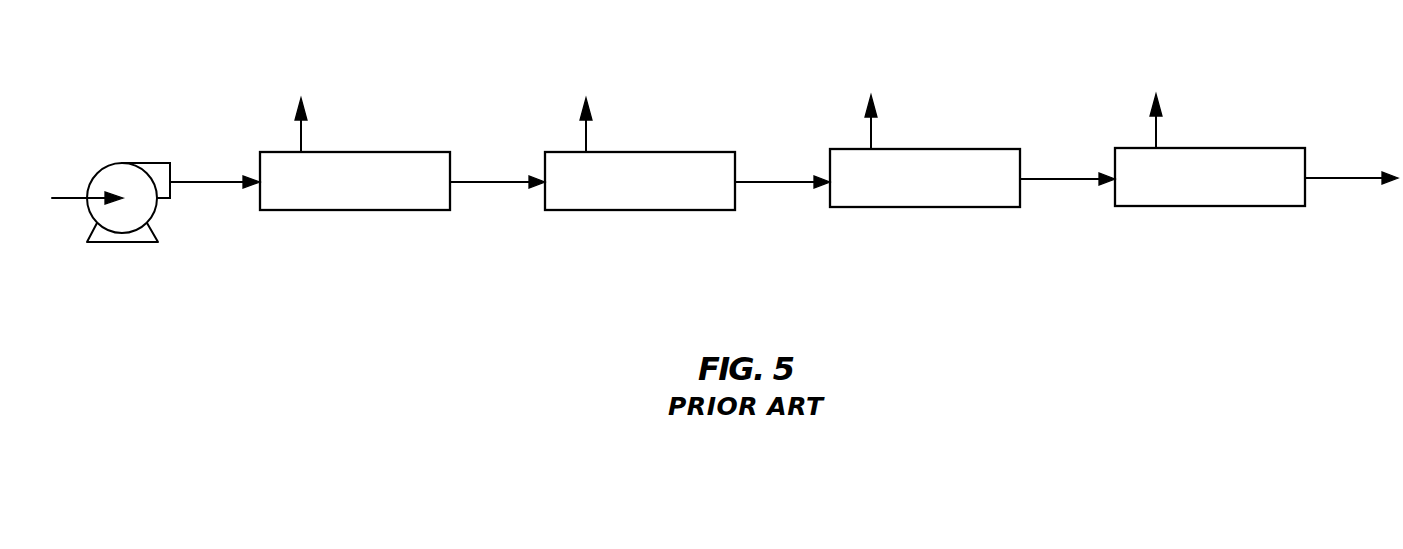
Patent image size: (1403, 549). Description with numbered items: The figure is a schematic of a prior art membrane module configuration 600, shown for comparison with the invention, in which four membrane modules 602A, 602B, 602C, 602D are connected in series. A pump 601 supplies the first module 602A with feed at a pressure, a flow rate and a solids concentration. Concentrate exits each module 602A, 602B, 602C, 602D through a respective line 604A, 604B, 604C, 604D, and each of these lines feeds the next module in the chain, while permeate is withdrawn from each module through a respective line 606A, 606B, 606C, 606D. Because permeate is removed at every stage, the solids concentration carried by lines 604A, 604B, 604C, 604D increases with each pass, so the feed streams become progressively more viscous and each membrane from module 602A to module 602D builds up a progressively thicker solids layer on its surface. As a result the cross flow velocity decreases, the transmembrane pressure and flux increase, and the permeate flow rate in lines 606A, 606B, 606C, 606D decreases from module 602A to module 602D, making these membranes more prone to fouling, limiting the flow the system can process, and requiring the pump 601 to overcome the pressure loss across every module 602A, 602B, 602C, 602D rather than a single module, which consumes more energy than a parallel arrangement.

The membrane module configuration 600 is at (310, 338).
The pump 601 is at (153, 227).
The membrane module 602A is at (368, 210).
The membrane module 602B is at (653, 210).
The membrane module 602C is at (938, 207).
The membrane module 602D is at (1223, 206).
The line 604A is at (508, 178).
The line 604B is at (793, 178).
The line 604C is at (1078, 175).
The line 604D is at (1363, 174).
The line 606A is at (303, 132).
The line 606B is at (588, 132).
The line 606C is at (873, 129).
The line 606D is at (1158, 128).